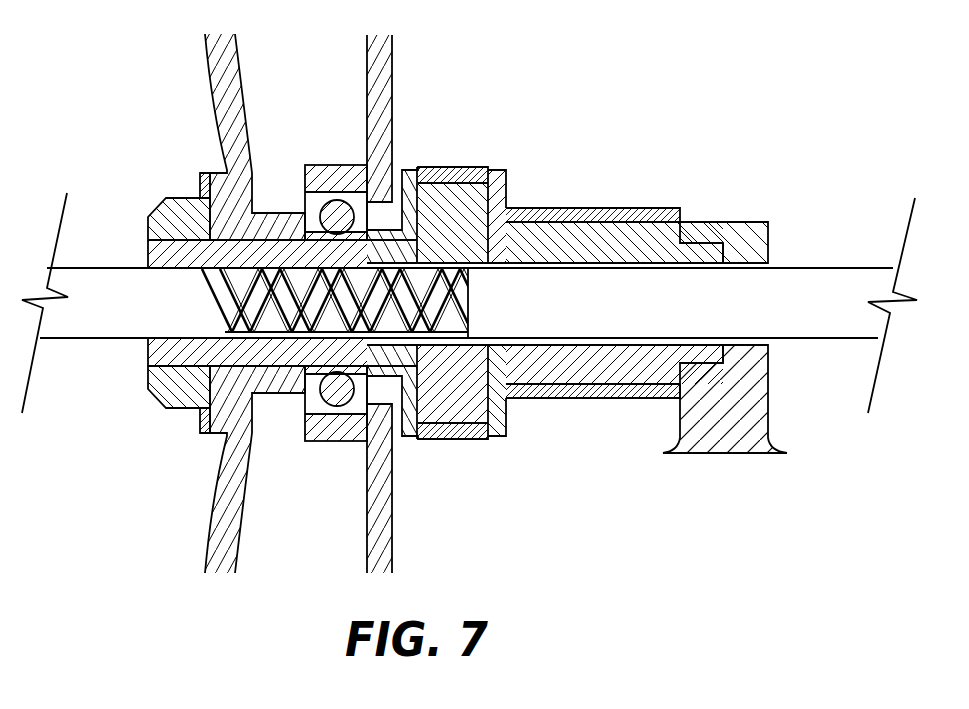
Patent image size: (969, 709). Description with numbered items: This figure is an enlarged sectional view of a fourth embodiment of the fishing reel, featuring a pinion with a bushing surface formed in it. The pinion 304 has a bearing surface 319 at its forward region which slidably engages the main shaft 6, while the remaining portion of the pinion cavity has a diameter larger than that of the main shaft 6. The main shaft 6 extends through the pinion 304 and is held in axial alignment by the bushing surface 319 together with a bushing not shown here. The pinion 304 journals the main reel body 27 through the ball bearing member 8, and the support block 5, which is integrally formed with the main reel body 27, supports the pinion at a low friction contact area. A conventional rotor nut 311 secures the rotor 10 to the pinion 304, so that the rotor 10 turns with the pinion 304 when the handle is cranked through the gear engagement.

The support block 5 is at (715, 228).
The main shaft 6 is at (817, 293).
The ball bearing member 8 is at (331, 212).
The rotor 10 is at (233, 72).
The main reel body 27 is at (377, 70).
The pinion 304 is at (622, 235).
The rotor nut 311 is at (170, 200).
The bearing surface 319 is at (170, 270).